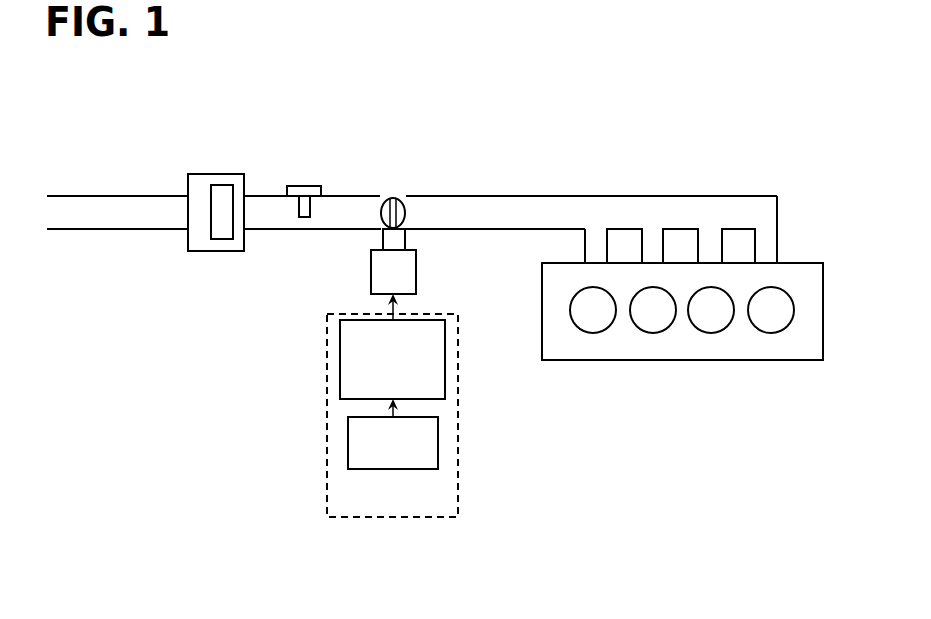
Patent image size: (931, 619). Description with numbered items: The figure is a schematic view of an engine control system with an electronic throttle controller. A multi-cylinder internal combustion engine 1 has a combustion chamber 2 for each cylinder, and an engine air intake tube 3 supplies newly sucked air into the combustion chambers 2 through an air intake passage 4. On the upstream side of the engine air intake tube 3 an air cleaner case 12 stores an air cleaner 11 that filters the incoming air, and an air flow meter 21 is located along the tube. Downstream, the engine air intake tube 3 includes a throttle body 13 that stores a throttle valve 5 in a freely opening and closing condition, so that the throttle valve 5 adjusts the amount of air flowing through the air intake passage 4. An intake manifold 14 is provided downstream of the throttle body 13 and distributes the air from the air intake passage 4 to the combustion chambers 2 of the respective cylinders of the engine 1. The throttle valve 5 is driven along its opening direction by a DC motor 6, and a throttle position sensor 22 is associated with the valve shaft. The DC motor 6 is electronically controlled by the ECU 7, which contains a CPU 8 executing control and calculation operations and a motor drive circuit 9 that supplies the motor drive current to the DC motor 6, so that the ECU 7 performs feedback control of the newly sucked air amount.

The internal combustion engine 1 is at (690, 360).
The combustion chamber 2 is at (595, 322).
The engine air intake tube 3 is at (124, 196).
The air intake passage 4 is at (506, 207).
The throttle valve 5 is at (405, 211).
The DC motor 6 is at (378, 273).
The engine control unit (ECU) 7 is at (440, 518).
The CPU 8 is at (439, 440).
The motor drive circuit 9 is at (446, 360).
The air cleaner 11 is at (222, 185).
The air cleaner case 12 is at (212, 256).
The throttle body 13 is at (357, 196).
The intake manifold 14 is at (778, 233).
The air flow meter 21 is at (307, 186).
The throttle position sensor 22 is at (402, 238).